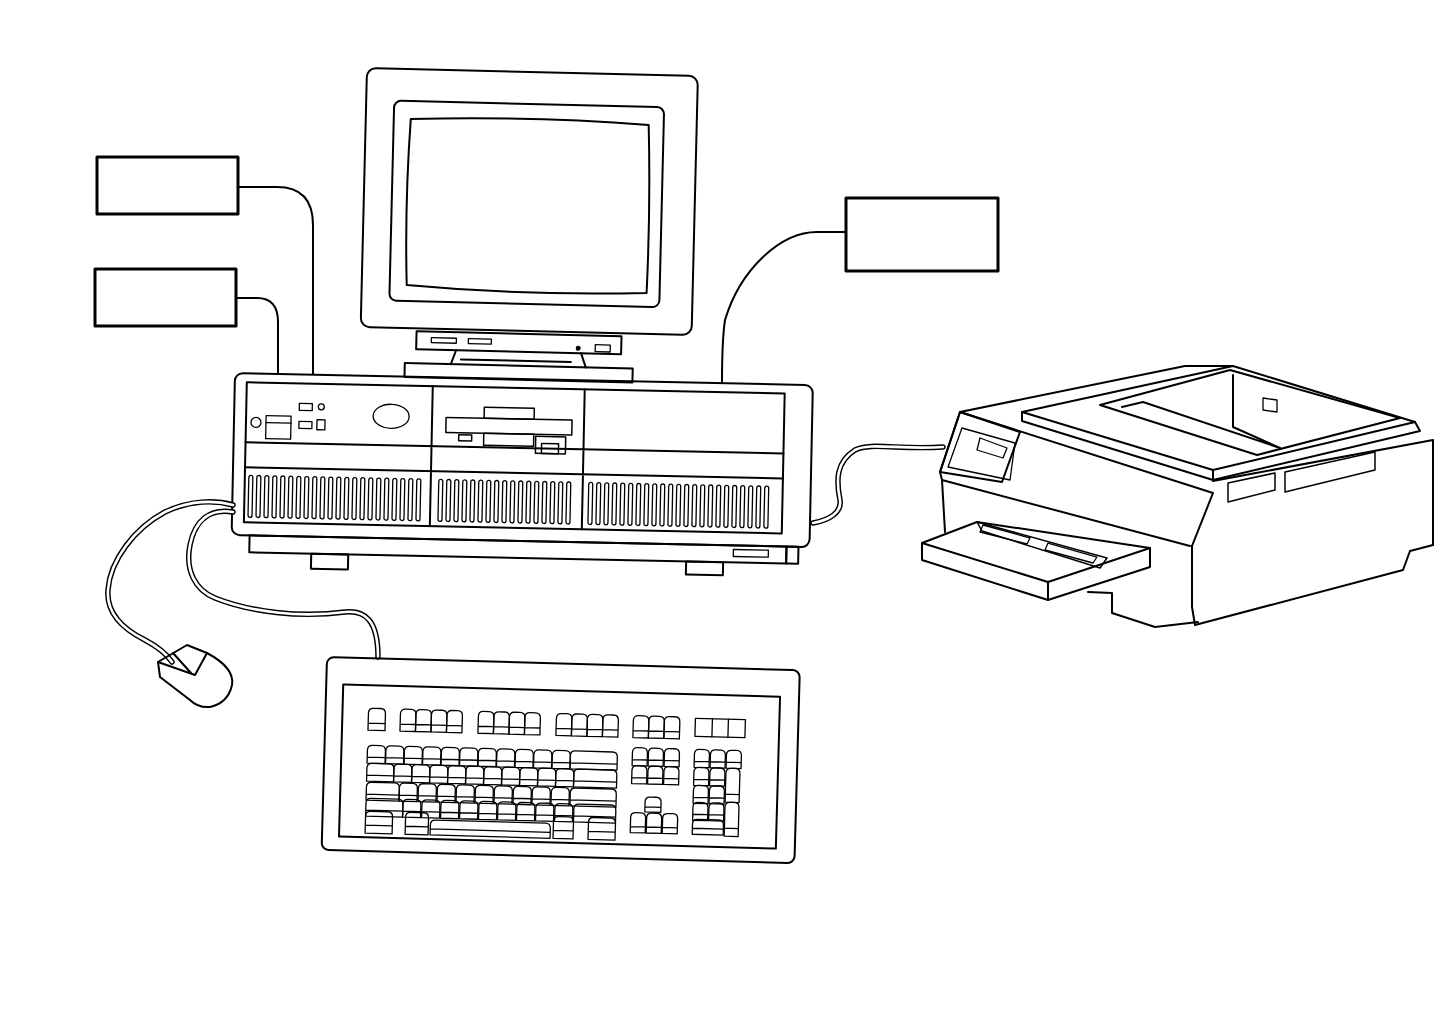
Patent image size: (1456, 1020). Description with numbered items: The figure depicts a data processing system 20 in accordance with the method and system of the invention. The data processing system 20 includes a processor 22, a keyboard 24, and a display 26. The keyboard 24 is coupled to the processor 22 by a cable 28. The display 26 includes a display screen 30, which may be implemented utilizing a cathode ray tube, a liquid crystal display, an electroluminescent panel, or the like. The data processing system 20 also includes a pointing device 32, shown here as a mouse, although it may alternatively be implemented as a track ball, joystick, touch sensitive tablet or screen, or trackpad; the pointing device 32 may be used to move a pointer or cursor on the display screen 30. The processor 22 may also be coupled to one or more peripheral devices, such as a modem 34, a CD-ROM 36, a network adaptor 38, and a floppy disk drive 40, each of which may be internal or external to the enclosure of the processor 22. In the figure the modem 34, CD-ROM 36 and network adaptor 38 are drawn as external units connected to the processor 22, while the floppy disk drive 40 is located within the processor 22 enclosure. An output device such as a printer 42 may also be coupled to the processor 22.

The data processing system 20 is at (1150, 145).
The processor 22 is at (795, 370).
The keyboard 24 is at (649, 650).
The display 26 is at (714, 225).
The cable 28 is at (383, 624).
The display screen 30 is at (610, 152).
The pointing device 32 is at (185, 691).
The modem 34 is at (131, 157).
The CD-ROM 36 is at (130, 269).
The network adaptor 38 is at (966, 198).
The floppy disk drive 40 is at (505, 432).
The printer 42 is at (951, 377).